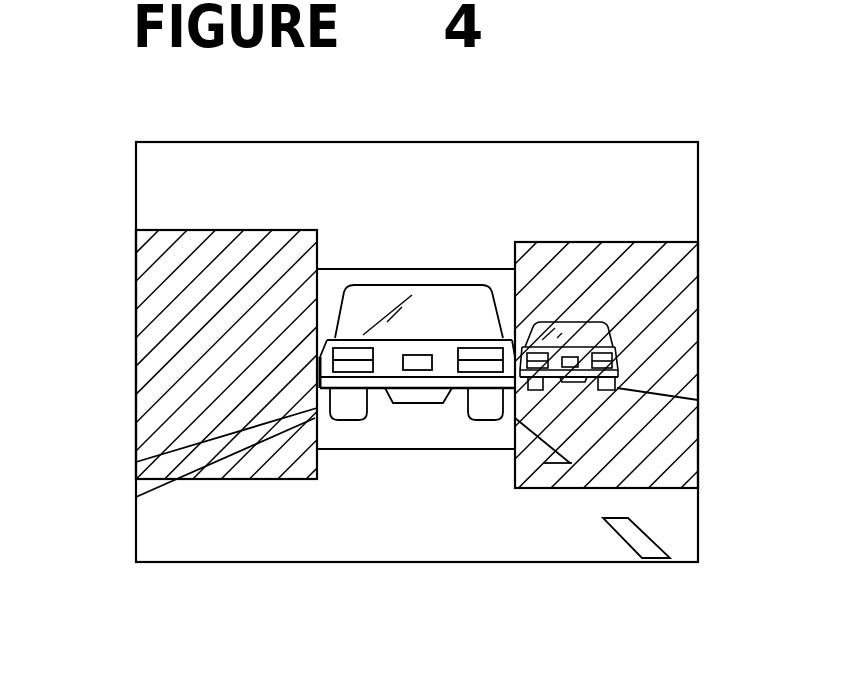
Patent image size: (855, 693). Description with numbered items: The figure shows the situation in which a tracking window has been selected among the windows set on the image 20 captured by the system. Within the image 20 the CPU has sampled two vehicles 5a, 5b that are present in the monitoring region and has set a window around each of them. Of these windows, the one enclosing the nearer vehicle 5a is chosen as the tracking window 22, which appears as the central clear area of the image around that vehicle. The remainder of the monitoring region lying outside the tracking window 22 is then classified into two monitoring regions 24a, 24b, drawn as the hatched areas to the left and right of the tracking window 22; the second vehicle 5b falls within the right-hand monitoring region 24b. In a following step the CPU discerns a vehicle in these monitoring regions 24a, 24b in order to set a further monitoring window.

The image 20 is at (698, 193).
The monitoring region 24a is at (177, 362).
The monitoring region 24b is at (655, 430).
The tracking window 22 is at (403, 449).
The vehicle 5a is at (427, 303).
The vehicle 5b is at (573, 328).